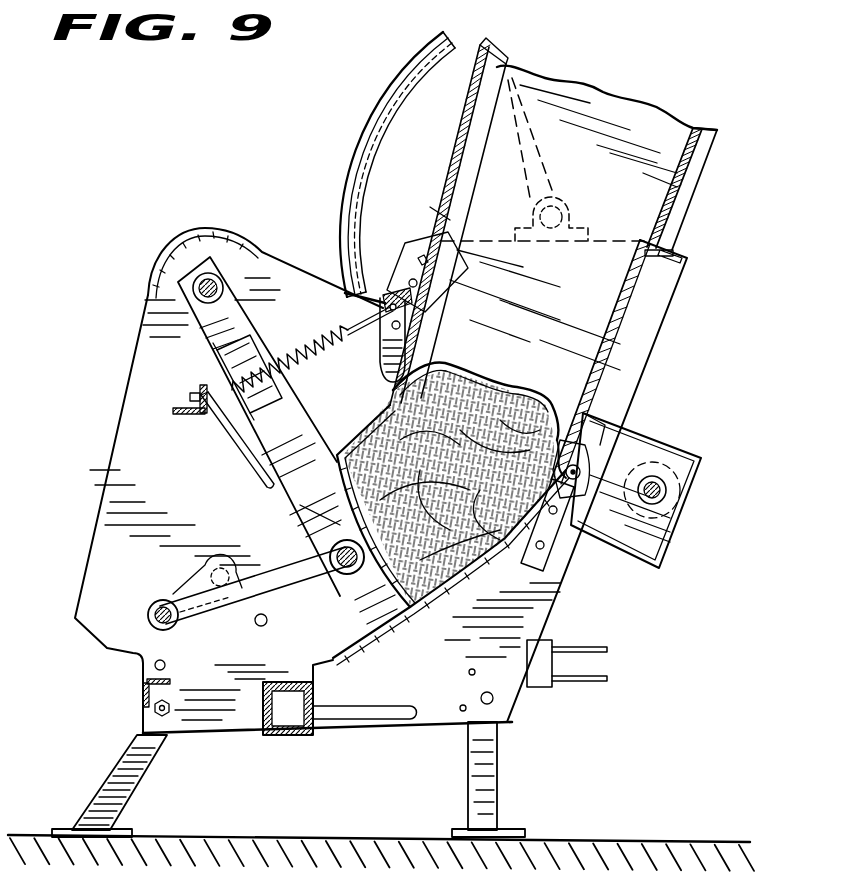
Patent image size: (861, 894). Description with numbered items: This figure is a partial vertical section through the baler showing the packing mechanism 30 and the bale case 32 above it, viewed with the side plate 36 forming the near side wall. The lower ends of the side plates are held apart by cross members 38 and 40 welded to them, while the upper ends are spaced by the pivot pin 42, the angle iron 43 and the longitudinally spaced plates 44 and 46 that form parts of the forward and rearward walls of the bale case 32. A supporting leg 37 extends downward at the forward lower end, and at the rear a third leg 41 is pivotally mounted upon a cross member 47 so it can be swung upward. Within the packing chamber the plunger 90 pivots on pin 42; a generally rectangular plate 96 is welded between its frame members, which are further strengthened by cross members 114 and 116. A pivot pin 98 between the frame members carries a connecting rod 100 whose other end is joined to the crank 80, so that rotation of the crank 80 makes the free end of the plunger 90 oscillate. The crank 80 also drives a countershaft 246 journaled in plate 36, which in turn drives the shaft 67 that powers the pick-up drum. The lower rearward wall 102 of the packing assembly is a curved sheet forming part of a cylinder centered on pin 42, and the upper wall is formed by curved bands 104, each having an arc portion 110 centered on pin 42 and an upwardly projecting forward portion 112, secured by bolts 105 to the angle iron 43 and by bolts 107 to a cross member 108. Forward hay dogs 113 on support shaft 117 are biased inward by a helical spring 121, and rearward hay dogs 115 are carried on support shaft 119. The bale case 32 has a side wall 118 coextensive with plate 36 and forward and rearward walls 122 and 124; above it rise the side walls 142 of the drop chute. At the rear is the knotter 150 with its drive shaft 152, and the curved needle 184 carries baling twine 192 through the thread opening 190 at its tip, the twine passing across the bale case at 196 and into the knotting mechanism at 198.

The packing mechanism 30 is at (282, 250).
The bale case 32 is at (678, 198).
The side plate 36 is at (110, 470).
The supporting leg 37 is at (140, 787).
The cross member 38 is at (143, 694).
The cross member 40 is at (295, 738).
The third leg 41 is at (490, 777).
The pivot pin 42 is at (210, 273).
The angle iron 43 is at (192, 416).
The plate 44 is at (432, 215).
The plate 46 is at (620, 320).
The cross member 47 is at (493, 700).
The shaft 67 is at (165, 665).
The crank 80 is at (174, 592).
The plunger 90 is at (302, 514).
The plate 96 is at (438, 578).
The pivot pin 98 is at (328, 548).
The connecting rod 100 is at (292, 582).
The wall 102 is at (385, 645).
The band 104 is at (268, 494).
The bolt 105 is at (200, 390).
The bolt 107 is at (398, 280).
The cross member 108 is at (428, 303).
The arc portion 110 is at (341, 452).
The forward portion 112 is at (236, 458).
The forward hay dog 113 is at (385, 343).
The cross member 114 is at (254, 306).
The rearward hay dog 115 is at (592, 438).
The cross member 116 is at (286, 412).
The support shaft 117 is at (410, 325).
The side wall 118 is at (638, 183).
The support shaft 119 is at (580, 473).
The helical spring 121 is at (332, 328).
The forward wall 122 is at (465, 218).
The rearward wall 124 is at (643, 218).
The side wall 142 is at (352, 177).
The knotter 150 is at (666, 560).
The drive shaft 152 is at (665, 490).
The needle 184 is at (362, 121).
The thread opening 190 is at (362, 292).
The baling twine 192 is at (500, 373).
The twine path across bale case 196 is at (545, 398).
The twine entry to knotter 198 is at (556, 462).
The countershaft 246 is at (264, 626).